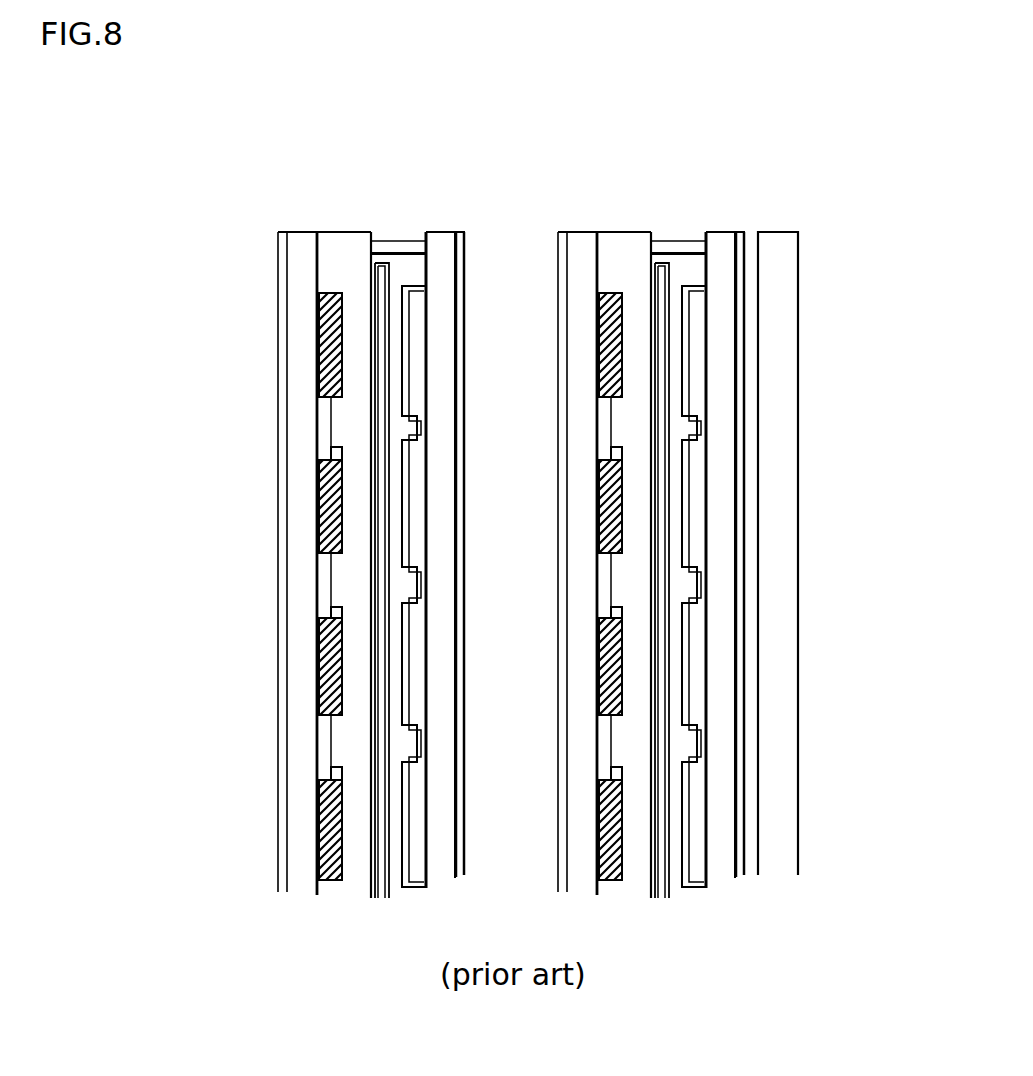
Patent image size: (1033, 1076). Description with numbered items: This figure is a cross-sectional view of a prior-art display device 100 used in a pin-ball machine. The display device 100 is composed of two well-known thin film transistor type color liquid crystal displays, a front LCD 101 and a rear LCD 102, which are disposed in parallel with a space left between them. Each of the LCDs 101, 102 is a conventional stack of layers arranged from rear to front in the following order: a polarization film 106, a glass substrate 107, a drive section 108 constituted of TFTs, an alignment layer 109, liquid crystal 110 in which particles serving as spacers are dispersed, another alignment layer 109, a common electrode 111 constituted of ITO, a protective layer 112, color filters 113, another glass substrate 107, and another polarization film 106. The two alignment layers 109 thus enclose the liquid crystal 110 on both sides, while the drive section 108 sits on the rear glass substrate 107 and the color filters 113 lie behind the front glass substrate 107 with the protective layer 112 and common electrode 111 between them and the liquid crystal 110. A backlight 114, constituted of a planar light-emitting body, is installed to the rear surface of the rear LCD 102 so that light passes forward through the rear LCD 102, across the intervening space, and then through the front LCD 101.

The display device 100 is at (209, 91).
The liquid crystal display 101 is at (256, 258).
The liquid crystal display 102 is at (544, 258).
The polarization film 106 is at (285, 450).
The glass substrate 107 is at (305, 372).
The drive section 108 is at (410, 342).
The alignment layer 109 is at (380, 532).
The liquid crystal 110 is at (414, 585).
The common electrode 111 is at (378, 588).
The protective layer 112 is at (325, 742).
The color filters 113 is at (335, 660).
The backlight 114 is at (780, 445).